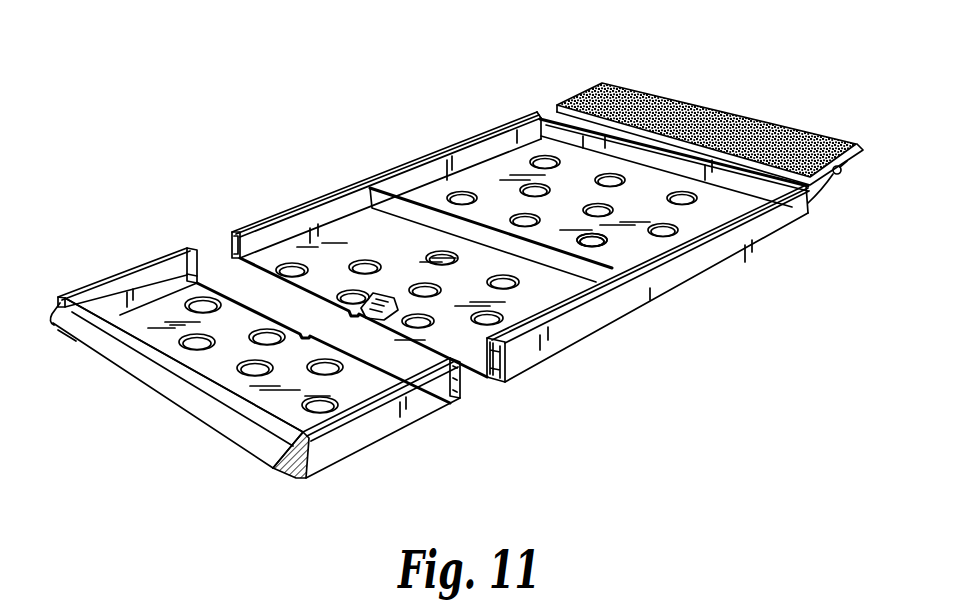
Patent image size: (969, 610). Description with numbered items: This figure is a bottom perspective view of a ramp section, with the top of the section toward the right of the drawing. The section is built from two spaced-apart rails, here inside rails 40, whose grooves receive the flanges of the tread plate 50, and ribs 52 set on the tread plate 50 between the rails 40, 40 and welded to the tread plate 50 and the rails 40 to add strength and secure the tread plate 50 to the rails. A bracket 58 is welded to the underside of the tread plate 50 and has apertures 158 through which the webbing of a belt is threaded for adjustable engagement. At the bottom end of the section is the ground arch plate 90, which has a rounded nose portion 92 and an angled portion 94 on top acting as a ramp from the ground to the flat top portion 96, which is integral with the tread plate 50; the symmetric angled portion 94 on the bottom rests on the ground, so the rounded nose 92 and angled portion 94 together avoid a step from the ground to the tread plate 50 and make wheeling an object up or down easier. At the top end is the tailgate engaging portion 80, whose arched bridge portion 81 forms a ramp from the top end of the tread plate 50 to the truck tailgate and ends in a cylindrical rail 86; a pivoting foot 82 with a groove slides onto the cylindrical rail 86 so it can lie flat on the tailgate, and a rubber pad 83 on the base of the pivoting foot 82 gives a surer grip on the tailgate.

The inside rail 40 is at (228, 246).
The tread plate 50 is at (484, 173).
The rib 52 is at (410, 198).
The bracket 58 is at (392, 297).
The aperture 158 is at (374, 296).
The tailgate engaging portion 80 is at (729, 144).
The arched bridge portion 81 is at (833, 193).
The pivoting foot 82 is at (858, 155).
The rubber pad 83 is at (823, 136).
The cylindrical rail 86 is at (838, 176).
The ground arch plate 90 is at (255, 391).
The rounded nose portion 92 is at (227, 447).
The angled portion 94 is at (183, 390).
The flat top portion 96 is at (298, 482).